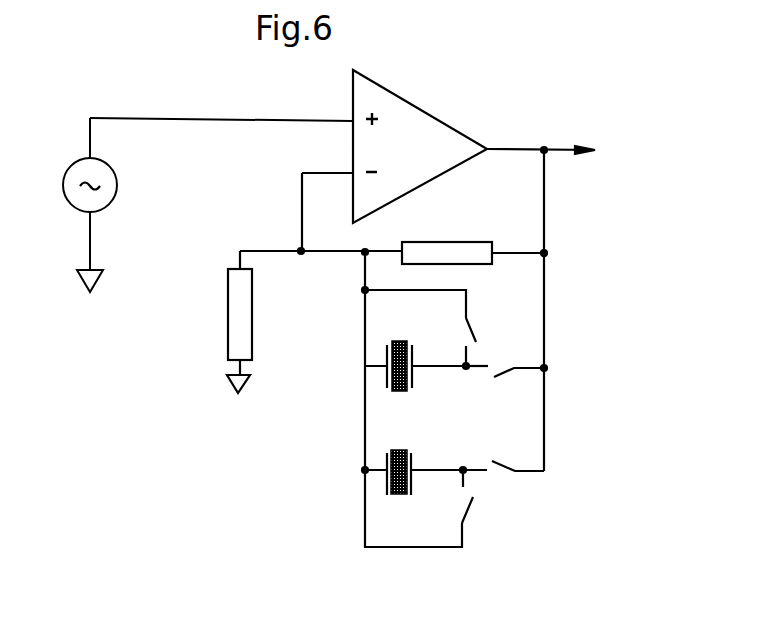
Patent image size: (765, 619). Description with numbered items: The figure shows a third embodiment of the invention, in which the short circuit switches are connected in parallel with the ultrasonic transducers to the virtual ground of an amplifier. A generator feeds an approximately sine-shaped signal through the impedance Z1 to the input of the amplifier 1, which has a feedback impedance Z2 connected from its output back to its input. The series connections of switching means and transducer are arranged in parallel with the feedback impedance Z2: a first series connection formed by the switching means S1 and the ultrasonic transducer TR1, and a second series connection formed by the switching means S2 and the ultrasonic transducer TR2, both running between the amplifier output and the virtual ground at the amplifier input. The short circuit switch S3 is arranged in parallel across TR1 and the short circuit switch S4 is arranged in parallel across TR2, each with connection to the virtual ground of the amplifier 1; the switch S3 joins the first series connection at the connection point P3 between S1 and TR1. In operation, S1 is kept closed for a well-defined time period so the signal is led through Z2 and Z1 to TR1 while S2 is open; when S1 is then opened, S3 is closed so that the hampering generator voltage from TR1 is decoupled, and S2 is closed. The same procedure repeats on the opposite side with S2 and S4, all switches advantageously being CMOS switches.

The amplifier 1 is at (448, 160).
The impedance Z1 is at (218, 322).
The feedback impedance Z2 is at (474, 240).
The ultrasonic transducer TR1 is at (426, 351).
The ultrasonic transducer TR2 is at (424, 459).
The switching means S1 is at (517, 358).
The switching means S2 is at (513, 452).
The short circuit switch S3 is at (436, 328).
The short circuit switch S4 is at (481, 498).
The connection point P3 is at (469, 384).